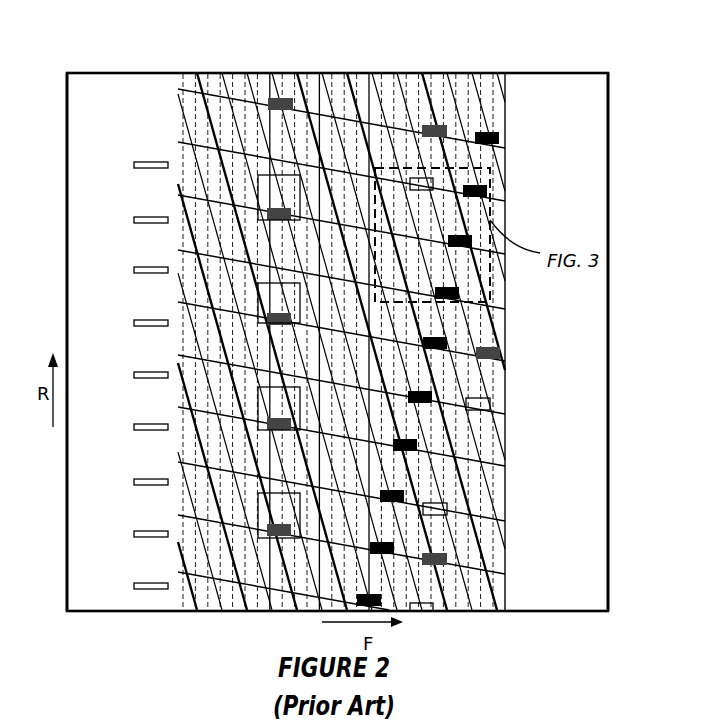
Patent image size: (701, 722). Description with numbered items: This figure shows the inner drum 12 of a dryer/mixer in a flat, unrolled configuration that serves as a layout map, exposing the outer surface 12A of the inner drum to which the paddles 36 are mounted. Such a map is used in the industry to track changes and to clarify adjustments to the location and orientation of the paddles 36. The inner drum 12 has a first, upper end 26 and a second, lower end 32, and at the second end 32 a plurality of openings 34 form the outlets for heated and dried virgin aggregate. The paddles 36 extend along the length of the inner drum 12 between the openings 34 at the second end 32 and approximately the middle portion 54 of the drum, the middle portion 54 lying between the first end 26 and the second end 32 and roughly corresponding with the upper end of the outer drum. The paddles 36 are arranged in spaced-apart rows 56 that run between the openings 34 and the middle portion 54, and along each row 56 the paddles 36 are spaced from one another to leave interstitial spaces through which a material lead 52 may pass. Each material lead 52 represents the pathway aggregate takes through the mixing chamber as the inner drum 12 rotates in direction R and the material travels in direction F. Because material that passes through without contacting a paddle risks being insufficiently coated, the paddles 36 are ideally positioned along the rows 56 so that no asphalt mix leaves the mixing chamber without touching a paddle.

The inner drum 12 is at (341, 52).
The outer surface of the inner drum 12A is at (126, 152).
The first (upper) end 26 is at (608, 350).
The second (lower) end 32 is at (65, 287).
The openings 34 is at (140, 216).
The paddles 36 is at (268, 314).
The material lead 52 is at (212, 100).
The middle portion 54 is at (507, 88).
The rows 56 is at (198, 143).